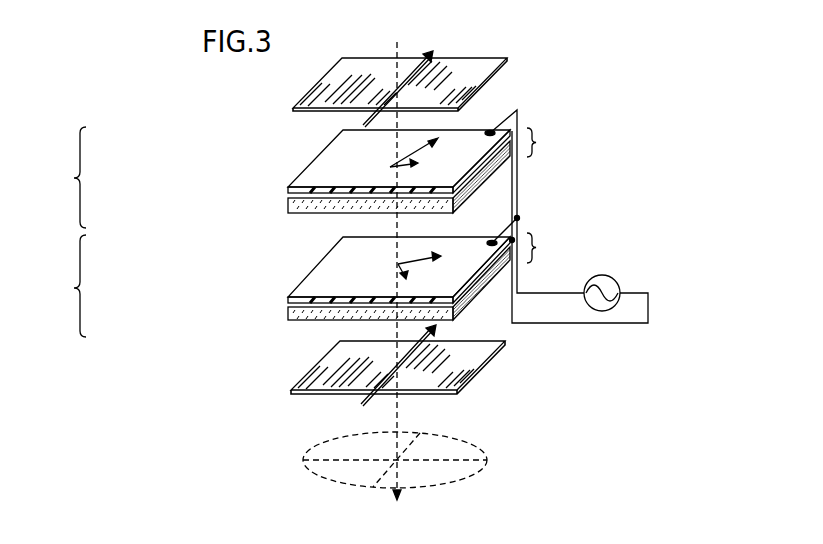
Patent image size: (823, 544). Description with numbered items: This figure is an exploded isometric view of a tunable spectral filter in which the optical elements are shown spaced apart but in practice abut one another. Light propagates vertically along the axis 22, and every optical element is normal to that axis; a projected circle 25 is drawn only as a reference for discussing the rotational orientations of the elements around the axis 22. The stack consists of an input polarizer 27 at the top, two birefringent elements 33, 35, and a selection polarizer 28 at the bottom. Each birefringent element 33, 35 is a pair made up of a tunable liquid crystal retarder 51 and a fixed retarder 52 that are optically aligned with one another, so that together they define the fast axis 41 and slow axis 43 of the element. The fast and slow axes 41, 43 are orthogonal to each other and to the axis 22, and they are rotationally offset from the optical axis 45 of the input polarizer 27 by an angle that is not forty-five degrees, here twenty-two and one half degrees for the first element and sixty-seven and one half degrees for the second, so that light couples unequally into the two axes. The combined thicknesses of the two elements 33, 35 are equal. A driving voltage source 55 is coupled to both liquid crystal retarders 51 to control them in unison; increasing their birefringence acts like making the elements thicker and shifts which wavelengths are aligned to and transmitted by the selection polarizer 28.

The axis 22 is at (396, 48).
The projected circle 25 is at (463, 481).
The input polarizer 27 is at (462, 88).
The selection polarizer 28 is at (333, 384).
The first birefringent element 33 is at (387, 177).
The second birefringent element 35 is at (387, 285).
The fast axis 41 is at (418, 151).
The slow axis 43 is at (390, 167).
The polarizer axis 45 is at (434, 52).
The tunable liquid crystal retarder 51 is at (349, 143).
The fixed retarder 52 is at (478, 186).
The driving voltage source 55 is at (620, 282).